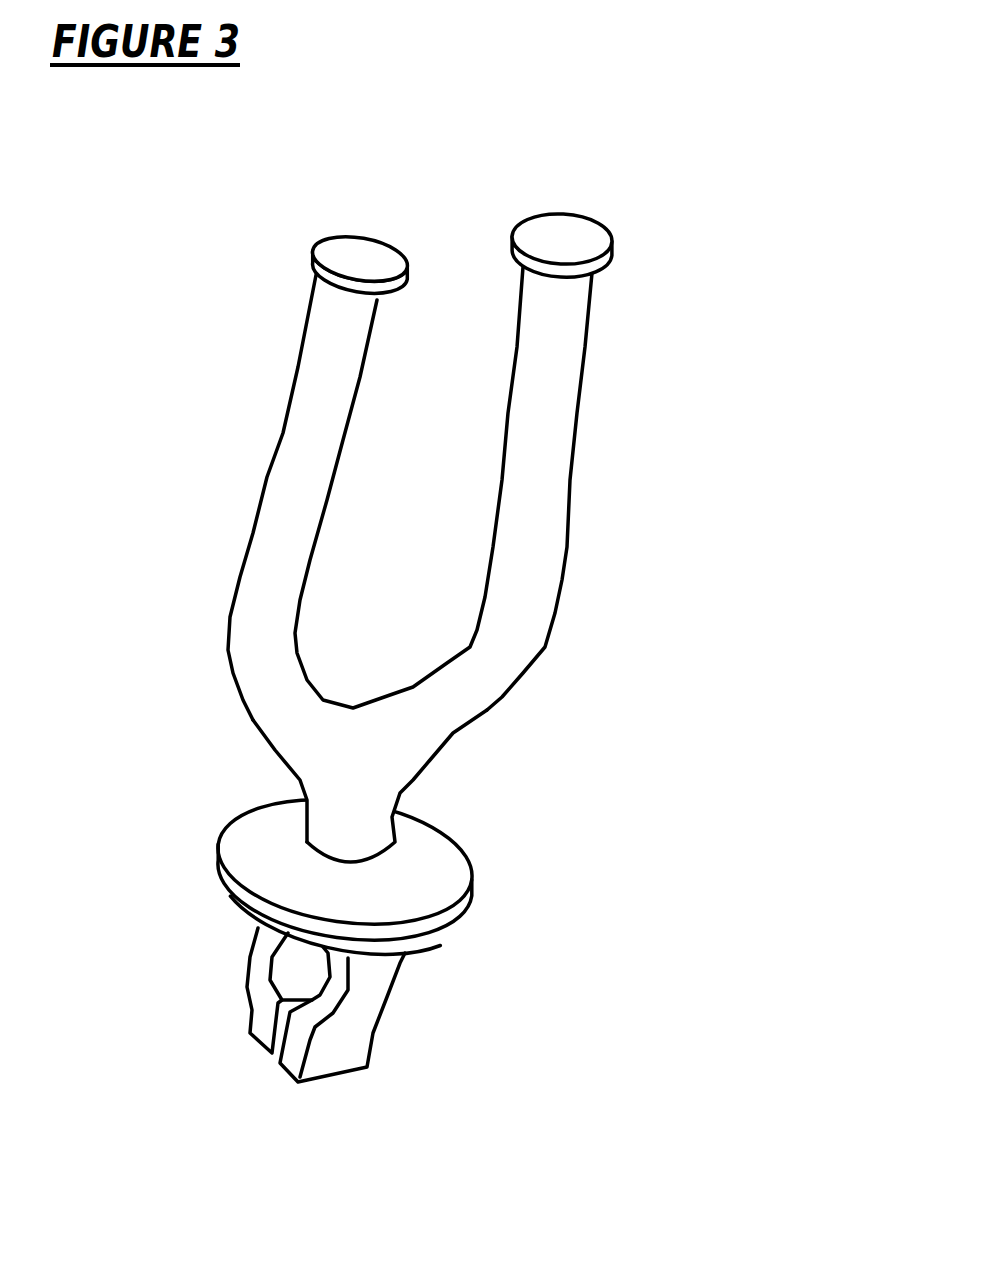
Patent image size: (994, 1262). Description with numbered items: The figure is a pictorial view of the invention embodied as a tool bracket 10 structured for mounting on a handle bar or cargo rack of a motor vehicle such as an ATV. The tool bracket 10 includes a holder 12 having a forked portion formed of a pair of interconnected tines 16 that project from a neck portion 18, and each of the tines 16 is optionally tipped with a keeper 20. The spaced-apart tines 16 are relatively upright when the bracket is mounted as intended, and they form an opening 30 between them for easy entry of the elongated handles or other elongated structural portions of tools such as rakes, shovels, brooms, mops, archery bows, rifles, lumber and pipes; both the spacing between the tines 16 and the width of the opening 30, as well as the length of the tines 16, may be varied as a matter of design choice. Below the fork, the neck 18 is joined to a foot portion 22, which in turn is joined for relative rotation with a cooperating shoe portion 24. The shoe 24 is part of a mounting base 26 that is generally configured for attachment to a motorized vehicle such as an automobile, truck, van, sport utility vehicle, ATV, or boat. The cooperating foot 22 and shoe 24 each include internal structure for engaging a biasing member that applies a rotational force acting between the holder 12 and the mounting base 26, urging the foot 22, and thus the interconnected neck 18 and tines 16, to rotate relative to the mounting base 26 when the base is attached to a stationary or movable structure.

The tool bracket 10 is at (437, 566).
The holder 12 is at (438, 521).
The tines 16 is at (426, 495).
The neck portion 18 is at (445, 786).
The keeper 20 is at (479, 252).
The foot portion 22 is at (260, 870).
The shoe portion 24 is at (315, 1005).
The mounting base 26 is at (182, 1007).
The opening 30 is at (468, 228).